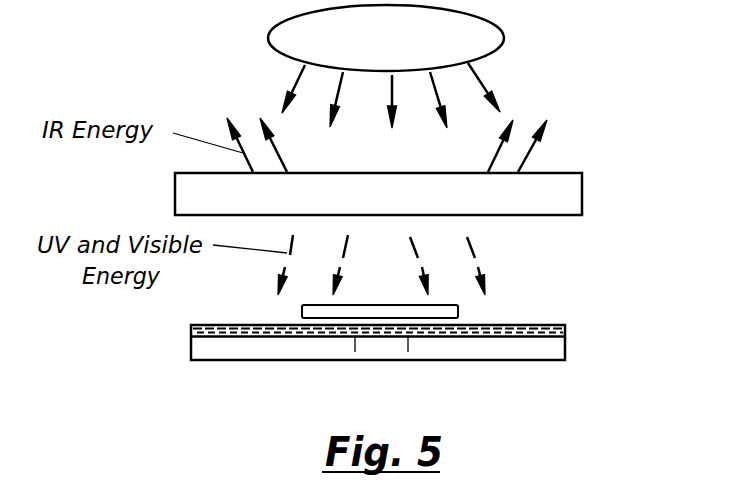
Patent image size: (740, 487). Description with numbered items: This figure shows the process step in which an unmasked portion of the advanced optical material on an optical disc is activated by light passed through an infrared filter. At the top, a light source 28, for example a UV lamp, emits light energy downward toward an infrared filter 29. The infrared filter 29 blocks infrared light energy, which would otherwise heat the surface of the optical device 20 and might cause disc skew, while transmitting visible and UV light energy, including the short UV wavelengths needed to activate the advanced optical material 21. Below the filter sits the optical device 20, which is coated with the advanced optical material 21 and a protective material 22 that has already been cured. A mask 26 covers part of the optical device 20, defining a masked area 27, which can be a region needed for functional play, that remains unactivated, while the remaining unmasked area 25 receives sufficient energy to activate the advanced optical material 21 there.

The optical device 20 is at (371, 367).
The advanced optical material 21 is at (545, 335).
The protective material 22 is at (540, 327).
The selected area 25 is at (230, 327).
The mask 26 is at (460, 313).
The masked area 27 is at (428, 337).
The light source 28 is at (488, 33).
The infrared filter 29 is at (567, 190).